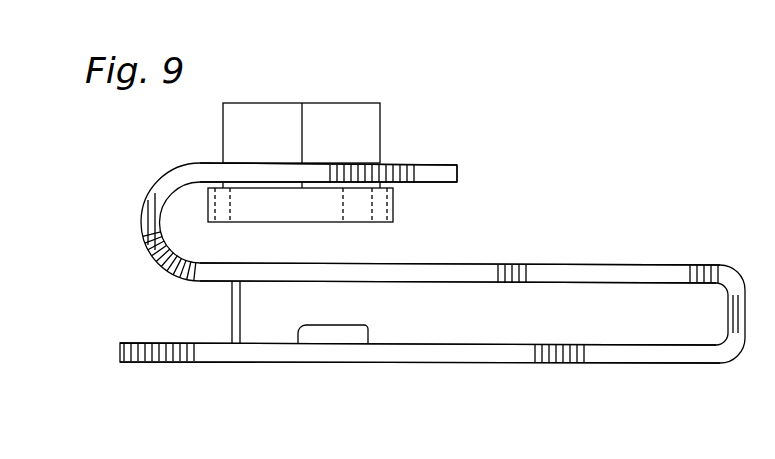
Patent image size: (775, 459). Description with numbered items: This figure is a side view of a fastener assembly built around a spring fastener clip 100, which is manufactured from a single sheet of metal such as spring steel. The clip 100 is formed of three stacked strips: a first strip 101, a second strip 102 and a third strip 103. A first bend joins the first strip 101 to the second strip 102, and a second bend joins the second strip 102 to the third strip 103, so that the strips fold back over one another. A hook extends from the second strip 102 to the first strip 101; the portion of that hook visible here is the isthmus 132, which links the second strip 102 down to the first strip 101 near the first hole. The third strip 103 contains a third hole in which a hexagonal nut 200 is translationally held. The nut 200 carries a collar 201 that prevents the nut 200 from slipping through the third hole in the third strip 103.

The spring fastener clip 100 is at (566, 183).
The first strip 101 is at (608, 363).
The second strip 102 is at (608, 265).
The third strip 103 is at (421, 164).
The isthmus 132 is at (241, 318).
The nut 200 is at (341, 93).
The collar 201 is at (393, 205).